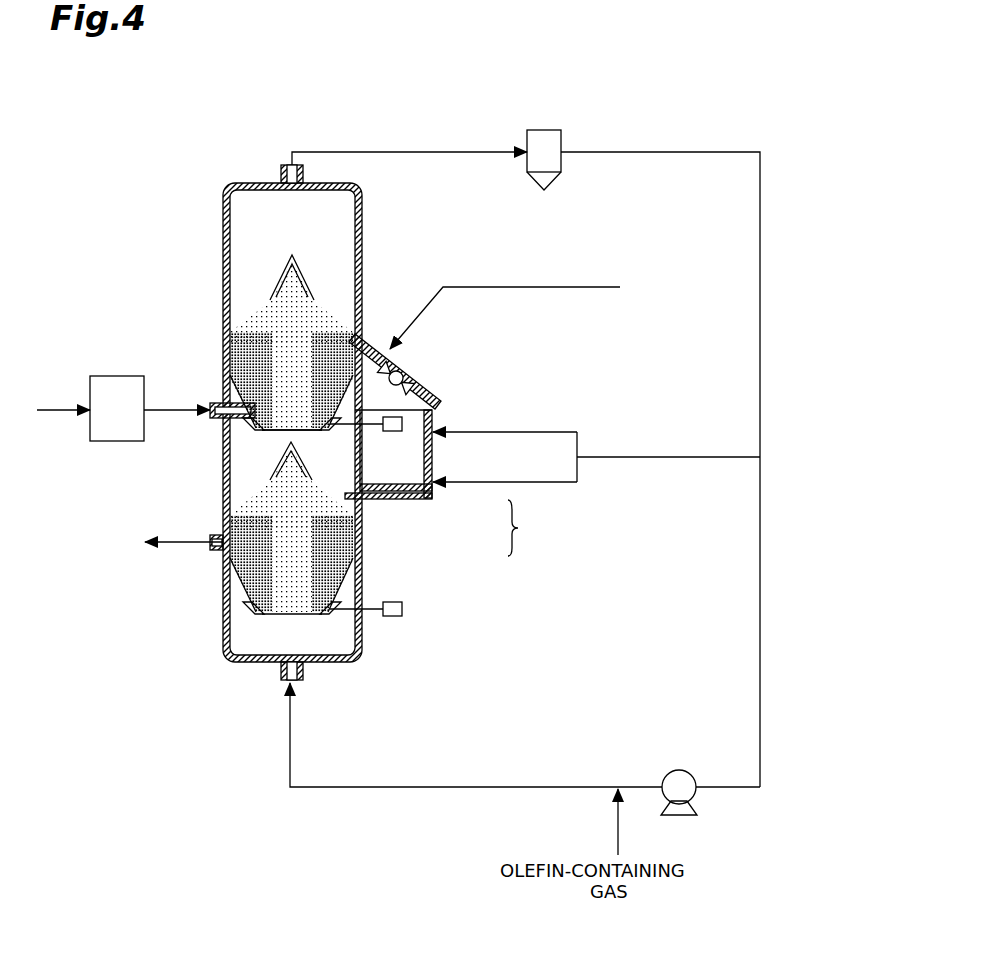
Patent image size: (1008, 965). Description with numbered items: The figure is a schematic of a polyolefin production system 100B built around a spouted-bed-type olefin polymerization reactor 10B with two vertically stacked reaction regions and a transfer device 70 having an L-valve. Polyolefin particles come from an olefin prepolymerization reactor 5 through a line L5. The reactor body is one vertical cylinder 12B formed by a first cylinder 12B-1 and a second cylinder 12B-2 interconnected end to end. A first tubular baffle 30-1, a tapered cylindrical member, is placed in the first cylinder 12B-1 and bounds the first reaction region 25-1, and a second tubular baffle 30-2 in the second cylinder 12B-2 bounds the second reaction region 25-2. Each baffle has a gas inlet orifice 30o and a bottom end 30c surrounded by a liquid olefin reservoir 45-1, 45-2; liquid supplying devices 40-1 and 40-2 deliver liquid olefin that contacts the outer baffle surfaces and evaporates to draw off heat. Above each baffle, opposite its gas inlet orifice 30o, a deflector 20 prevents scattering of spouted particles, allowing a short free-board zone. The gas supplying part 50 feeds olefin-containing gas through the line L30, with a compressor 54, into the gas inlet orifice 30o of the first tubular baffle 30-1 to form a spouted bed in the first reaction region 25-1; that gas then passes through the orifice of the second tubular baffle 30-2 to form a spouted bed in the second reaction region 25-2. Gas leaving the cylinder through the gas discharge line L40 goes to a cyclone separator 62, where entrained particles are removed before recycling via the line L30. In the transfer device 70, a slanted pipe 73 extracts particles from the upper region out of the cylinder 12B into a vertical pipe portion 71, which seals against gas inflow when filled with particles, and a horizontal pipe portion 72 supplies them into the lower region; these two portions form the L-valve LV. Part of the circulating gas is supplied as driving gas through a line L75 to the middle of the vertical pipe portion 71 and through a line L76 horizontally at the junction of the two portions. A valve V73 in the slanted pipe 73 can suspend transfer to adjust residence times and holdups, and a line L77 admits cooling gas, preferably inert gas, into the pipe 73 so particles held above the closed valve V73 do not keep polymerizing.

The polyolefin production system 100B is at (777, 57).
The olefin polymerization reactor 10B is at (429, 425).
The cylinder 12B is at (224, 240).
The first cylinder 12B-1 is at (293, 530).
The second cylinder 12B-2 is at (293, 369).
The deflector 20 is at (280, 268).
The first reaction region 25-1 is at (262, 500).
The second reaction region 25-2 is at (262, 318).
The bottom end of tubular baffle 30c is at (255, 425).
The gas inlet orifice 30o is at (292, 615).
The first tubular baffle 30-1 is at (335, 595).
The second tubular baffle 30-2 is at (436, 406).
The liquid supplying device 40-1 is at (402, 610).
The liquid supplying device 40-2 is at (393, 431).
The liquid olefin reservoir 45-1 is at (322, 614).
The liquid olefin reservoir 45-2 is at (322, 430).
The olefin prepolymerization reactor 5 is at (118, 376).
The catalyst feed line L5 is at (172, 410).
The line L30 is at (550, 787).
The gas discharge line L40 is at (440, 152).
The cyclone separator 62 is at (562, 140).
The compressor 54 is at (682, 770).
The gas supplying part 50 is at (290, 800).
The transfer device 70 is at (490, 441).
The vertical pipe portion 71 is at (437, 462).
The horizontal pipe portion 72 is at (430, 499).
The slanted pipe 73 is at (428, 398).
The valve V73 is at (412, 374).
The line L75 is at (550, 432).
The line L76 is at (560, 482).
The line L77 is at (532, 287).
The L-valve LV is at (526, 528).